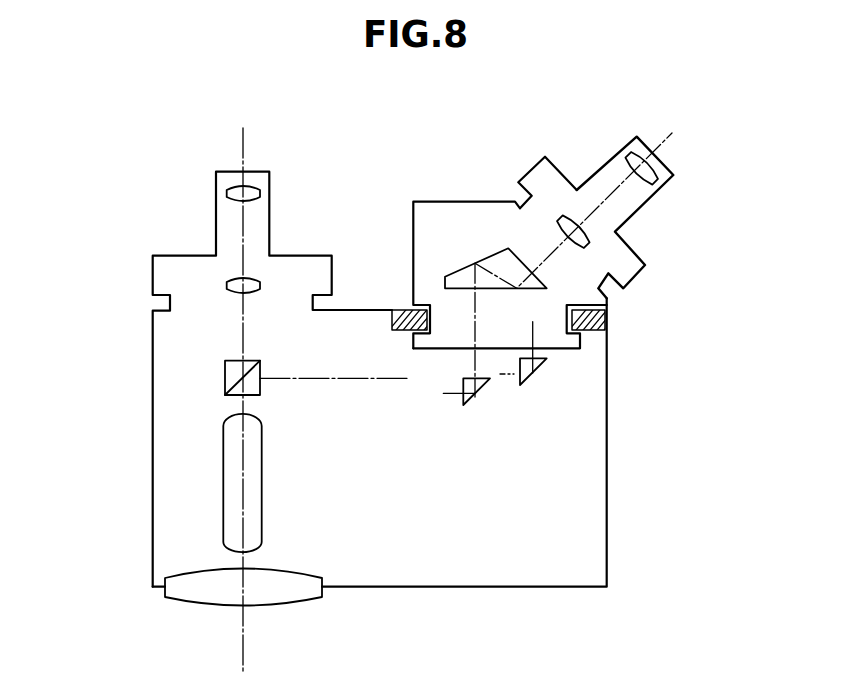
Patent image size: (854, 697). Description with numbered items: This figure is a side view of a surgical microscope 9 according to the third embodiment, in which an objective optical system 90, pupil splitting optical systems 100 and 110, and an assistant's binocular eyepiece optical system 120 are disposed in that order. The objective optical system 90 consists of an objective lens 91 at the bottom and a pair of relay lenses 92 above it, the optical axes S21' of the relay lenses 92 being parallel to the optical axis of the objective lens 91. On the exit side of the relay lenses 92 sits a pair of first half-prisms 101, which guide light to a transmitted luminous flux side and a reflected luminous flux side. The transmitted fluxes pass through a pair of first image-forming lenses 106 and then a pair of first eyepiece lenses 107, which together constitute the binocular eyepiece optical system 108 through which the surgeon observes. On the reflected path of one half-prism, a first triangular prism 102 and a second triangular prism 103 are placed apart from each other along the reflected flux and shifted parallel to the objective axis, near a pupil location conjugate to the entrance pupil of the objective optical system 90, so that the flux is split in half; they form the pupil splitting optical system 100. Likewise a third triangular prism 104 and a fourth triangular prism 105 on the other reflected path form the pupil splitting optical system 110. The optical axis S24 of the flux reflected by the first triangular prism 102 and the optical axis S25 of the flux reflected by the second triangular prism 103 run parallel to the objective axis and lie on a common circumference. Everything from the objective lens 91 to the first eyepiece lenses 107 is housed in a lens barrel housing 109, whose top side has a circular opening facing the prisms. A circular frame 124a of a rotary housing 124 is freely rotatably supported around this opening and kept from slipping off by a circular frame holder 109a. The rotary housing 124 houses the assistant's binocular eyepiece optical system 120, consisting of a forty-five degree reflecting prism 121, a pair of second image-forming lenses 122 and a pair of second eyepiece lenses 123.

The surgical microscope 9 is at (531, 130).
The objective optical system 90 is at (80, 502).
The objective lens 91 is at (166, 598).
The relay lenses 92 is at (223, 511).
The pupil splitting optical system 100 is at (732, 512).
The pupil splitting optical system 110 is at (586, 432).
The first half-prisms 101 is at (225, 379).
The first triangular prism 102 is at (473, 397).
The third triangular prism 104 is at (466, 391).
The second triangular prism 103 is at (537, 371).
The fourth triangular prism 105 is at (533, 371).
The first image-forming lenses 106 is at (227, 285).
The first eyepiece lenses 107 is at (227, 191).
The binocular eyepiece optical system 108 is at (80, 176).
The lens barrel housing 109 is at (152, 440).
The circular frame holder 109a is at (607, 322).
The assistant's binocular eyepiece optical system 120 is at (715, 210).
The 45° reflecting prism 121 is at (625, 286).
The second image-forming lenses 122 is at (586, 246).
The second eyepiece lenses 123 is at (657, 185).
The rotary housing 124 is at (455, 201).
The circular frame 124a is at (407, 310).
The optical axes of the relay lenses S21' is at (201, 407).
The optical axis S24 is at (475, 301).
The optical axis S25 is at (537, 332).